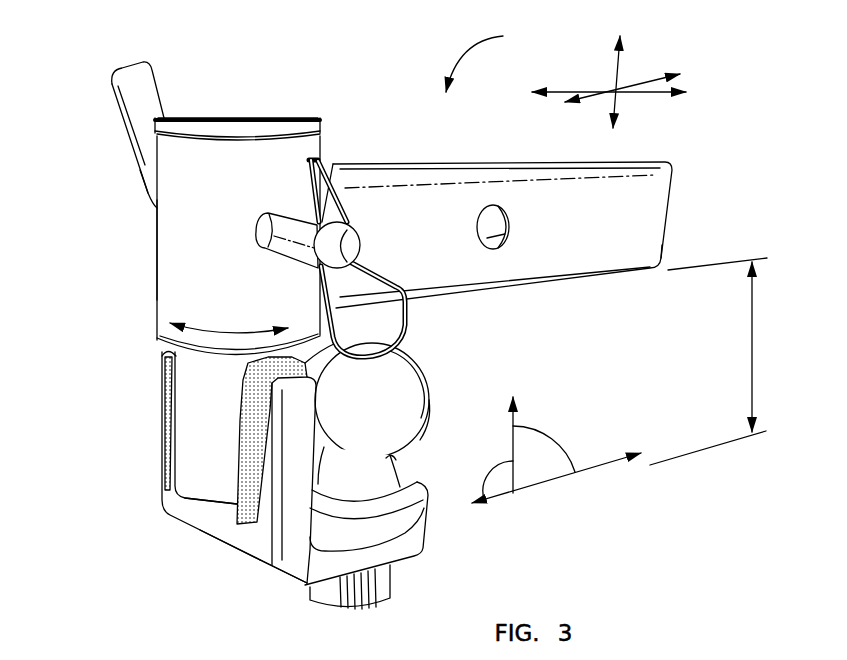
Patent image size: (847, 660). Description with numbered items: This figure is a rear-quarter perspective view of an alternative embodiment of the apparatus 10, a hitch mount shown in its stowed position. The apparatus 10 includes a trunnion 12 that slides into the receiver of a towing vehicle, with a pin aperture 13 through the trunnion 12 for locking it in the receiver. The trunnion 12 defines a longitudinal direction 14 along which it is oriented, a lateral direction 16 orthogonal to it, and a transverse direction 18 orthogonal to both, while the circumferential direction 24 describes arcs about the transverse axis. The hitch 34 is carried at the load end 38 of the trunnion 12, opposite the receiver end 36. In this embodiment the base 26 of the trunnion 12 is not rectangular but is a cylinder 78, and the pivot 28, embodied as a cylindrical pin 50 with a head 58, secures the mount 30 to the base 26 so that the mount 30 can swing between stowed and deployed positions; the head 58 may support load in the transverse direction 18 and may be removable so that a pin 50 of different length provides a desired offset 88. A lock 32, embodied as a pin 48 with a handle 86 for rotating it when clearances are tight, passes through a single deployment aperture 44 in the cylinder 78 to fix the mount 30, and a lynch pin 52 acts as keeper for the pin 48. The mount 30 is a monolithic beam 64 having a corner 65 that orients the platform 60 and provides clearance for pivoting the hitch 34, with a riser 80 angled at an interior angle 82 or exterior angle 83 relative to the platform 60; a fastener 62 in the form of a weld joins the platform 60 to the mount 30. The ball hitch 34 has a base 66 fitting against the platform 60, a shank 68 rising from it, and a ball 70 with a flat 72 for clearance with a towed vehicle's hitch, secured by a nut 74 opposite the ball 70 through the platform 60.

The apparatus 10 is at (487, 55).
The trunnion 12 is at (674, 178).
The pin aperture 13 is at (494, 236).
The longitudinal direction 14 is at (647, 96).
The lateral direction 16 is at (658, 77).
The transverse direction 18 is at (618, 63).
The circumferential direction 24 is at (208, 330).
The base 26 is at (153, 238).
The pivot 28 is at (282, 111).
The mount 30 is at (148, 457).
The lock 32 is at (128, 178).
The hitch 34 is at (426, 413).
The receiver end 36 is at (643, 247).
The load end 38 is at (347, 172).
The deployment aperture 44 is at (268, 258).
The pin 48 is at (352, 248).
The pin 50 is at (200, 465).
The lynch pin 52 is at (402, 332).
The head 58 is at (224, 120).
The platform 60 is at (435, 533).
The fastener 62 is at (237, 505).
The beam 64 is at (258, 566).
The corner 65 is at (292, 567).
The base 66 is at (408, 485).
The shank 68 is at (392, 461).
The ball 70 is at (410, 382).
The flat 72 is at (372, 342).
The nut 74 is at (385, 582).
The cylinder 78 is at (167, 282).
The riser 80 is at (280, 513).
The interior angle 82 is at (556, 436).
The exterior angle 83 is at (510, 468).
The handle 86 is at (134, 113).
The offset 88 is at (753, 347).